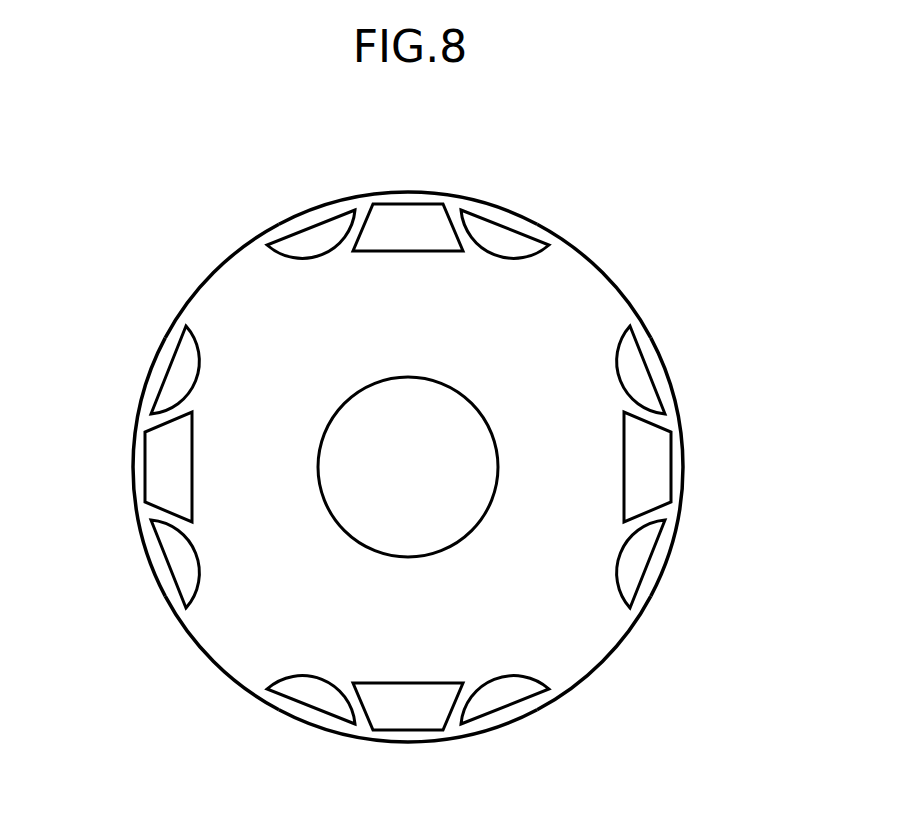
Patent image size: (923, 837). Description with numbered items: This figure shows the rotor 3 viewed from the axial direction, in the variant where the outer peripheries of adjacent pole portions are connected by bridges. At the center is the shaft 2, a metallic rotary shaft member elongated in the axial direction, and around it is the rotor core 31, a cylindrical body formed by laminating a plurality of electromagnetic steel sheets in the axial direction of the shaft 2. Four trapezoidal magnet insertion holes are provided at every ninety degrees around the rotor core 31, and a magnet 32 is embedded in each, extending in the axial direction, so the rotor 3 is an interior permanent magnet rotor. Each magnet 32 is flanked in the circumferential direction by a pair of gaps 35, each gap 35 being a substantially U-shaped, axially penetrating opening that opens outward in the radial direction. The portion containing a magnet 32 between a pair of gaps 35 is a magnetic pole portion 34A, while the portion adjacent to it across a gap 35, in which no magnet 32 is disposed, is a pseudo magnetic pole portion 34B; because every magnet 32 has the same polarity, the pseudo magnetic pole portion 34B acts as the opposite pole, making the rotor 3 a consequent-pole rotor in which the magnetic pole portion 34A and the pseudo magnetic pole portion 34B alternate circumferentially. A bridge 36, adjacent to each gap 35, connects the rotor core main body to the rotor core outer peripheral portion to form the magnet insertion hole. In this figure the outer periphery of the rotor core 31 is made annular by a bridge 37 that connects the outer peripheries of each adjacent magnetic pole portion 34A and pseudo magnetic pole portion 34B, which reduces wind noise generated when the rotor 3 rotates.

The shaft 2 is at (355, 510).
The rotor 3 is at (636, 162).
The rotor core 31 is at (213, 325).
The magnet 32 is at (418, 223).
The magnetic pole portion 34A is at (389, 179).
The pseudo magnetic pole portion 34B is at (208, 259).
The gap 35 is at (295, 247).
The bridge 36 is at (358, 228).
The bridge 37 is at (312, 217).